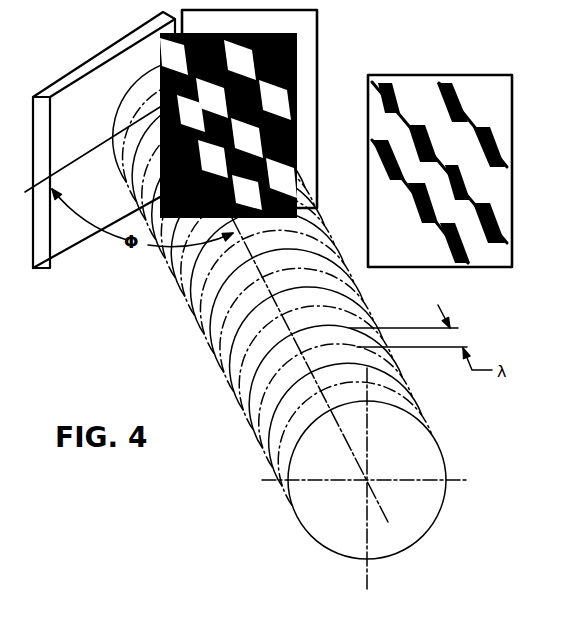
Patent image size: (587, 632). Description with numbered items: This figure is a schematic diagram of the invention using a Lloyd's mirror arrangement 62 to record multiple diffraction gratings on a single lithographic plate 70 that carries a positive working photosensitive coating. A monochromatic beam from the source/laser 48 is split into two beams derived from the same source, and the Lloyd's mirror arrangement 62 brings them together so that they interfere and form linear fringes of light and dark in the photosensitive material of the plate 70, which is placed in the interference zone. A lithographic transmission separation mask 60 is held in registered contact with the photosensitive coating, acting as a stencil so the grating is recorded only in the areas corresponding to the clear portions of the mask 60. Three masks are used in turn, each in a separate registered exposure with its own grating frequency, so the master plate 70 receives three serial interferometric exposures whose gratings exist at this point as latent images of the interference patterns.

The source/laser 48 is at (442, 458).
The separation mask 60 is at (298, 72).
The Lloyd's mirror arrangement 62 is at (96, 56).
The plate 70 is at (318, 36).